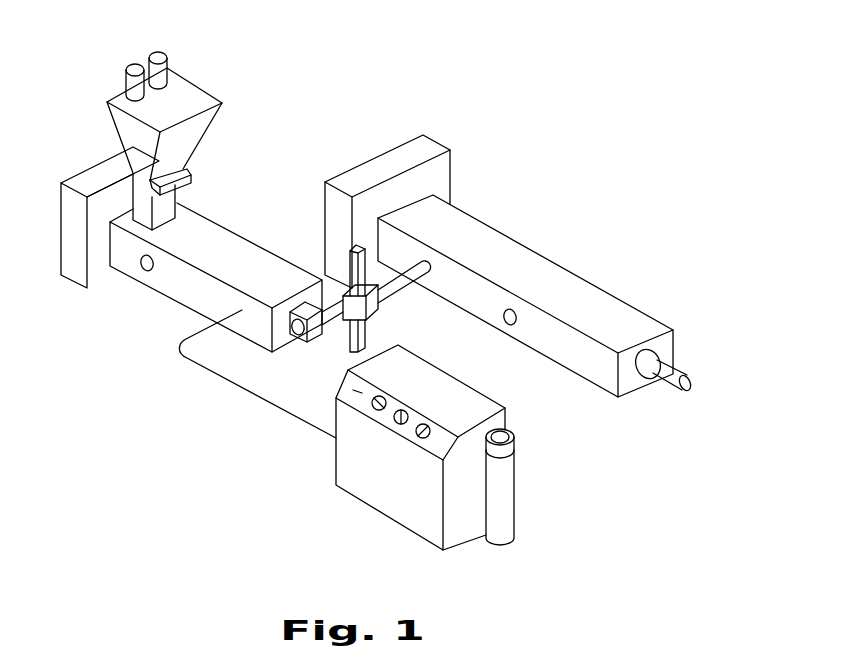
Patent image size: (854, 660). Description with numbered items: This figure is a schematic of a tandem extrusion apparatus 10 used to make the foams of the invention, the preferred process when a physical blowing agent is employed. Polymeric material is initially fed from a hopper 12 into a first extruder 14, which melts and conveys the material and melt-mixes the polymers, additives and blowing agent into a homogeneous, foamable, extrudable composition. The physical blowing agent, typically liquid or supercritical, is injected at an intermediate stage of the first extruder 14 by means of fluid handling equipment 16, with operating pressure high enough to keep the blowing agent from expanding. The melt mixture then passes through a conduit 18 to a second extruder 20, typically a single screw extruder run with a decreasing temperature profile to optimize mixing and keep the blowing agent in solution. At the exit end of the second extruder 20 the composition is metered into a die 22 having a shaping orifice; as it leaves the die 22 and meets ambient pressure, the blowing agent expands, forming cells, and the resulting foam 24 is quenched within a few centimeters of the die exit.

The tandem extrusion apparatus 10 is at (420, 91).
The hopper 12 is at (203, 87).
The first extruder 14 is at (215, 222).
The fluid handling equipment 16 is at (372, 497).
The conduit 18 is at (337, 315).
The second extruder 20 is at (478, 220).
The die 22 is at (676, 343).
The foam 24 is at (680, 372).